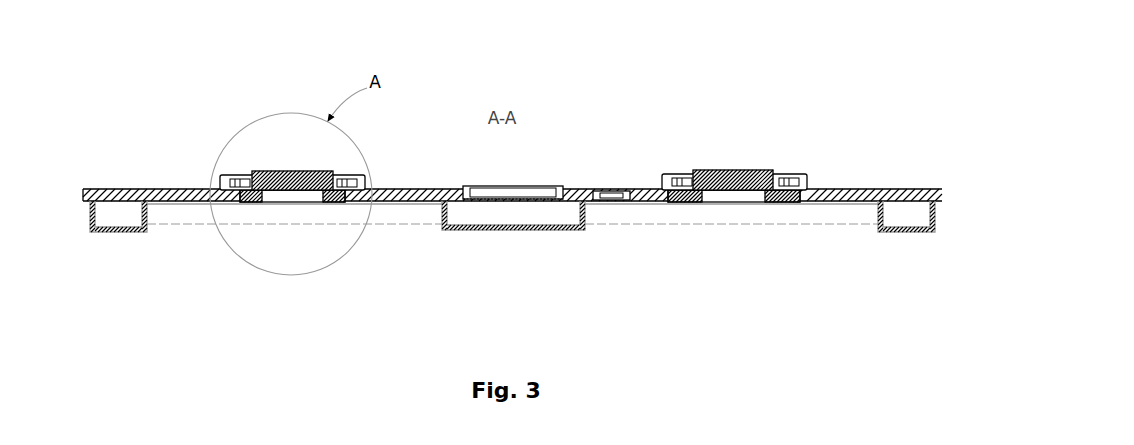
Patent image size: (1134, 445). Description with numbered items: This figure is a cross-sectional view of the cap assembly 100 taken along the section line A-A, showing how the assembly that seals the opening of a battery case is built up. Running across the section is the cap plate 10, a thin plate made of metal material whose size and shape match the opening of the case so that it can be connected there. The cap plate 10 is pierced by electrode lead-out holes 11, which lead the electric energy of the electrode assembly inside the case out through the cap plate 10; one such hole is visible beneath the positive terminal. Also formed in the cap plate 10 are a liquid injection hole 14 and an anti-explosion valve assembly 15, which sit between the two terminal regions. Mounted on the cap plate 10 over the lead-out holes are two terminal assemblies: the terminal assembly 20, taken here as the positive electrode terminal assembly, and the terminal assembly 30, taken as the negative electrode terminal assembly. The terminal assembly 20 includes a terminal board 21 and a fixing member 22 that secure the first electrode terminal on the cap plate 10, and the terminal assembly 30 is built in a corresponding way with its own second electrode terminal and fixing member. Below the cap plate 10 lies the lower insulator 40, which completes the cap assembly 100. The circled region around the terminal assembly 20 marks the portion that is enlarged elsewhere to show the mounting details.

The cap assembly 100 is at (507, 159).
The cap plate 10 is at (138, 191).
The electrode lead-out hole 11 is at (292, 205).
The liquid injection hole 14 is at (618, 190).
The anti-explosion valve assembly 15 is at (525, 189).
The terminal assembly 20 is at (314, 189).
The terminal board 21 is at (326, 172).
The fixing member 22 is at (366, 176).
The terminal assembly 30 is at (790, 157).
The lower insulator 40 is at (673, 215).